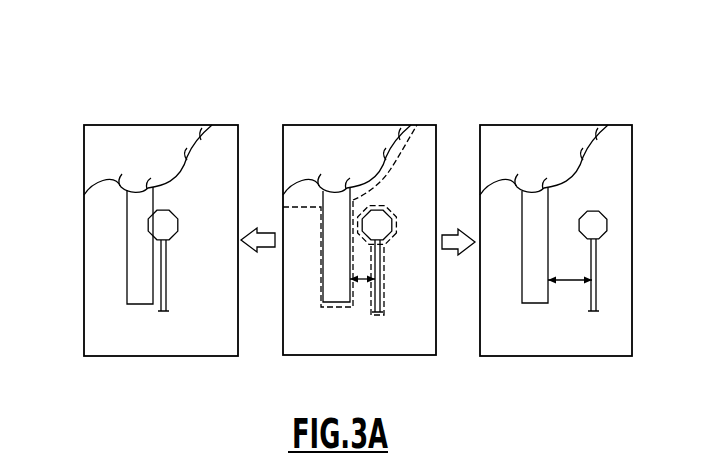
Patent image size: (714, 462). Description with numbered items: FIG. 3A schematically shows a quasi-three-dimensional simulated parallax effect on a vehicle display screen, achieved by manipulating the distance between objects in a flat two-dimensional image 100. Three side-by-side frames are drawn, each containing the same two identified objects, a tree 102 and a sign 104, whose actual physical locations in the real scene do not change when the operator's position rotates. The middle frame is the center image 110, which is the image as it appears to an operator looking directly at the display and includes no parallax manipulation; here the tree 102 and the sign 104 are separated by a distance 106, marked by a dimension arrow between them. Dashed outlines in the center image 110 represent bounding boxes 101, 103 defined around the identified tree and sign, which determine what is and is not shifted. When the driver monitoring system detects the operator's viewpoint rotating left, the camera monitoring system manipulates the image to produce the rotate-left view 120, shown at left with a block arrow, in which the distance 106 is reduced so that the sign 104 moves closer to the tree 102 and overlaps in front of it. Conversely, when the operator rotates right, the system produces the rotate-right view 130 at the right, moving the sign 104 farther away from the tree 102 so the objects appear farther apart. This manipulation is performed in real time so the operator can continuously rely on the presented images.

The flat 2D image 100 is at (378, 60).
The bounding box 101 is at (320, 290).
The tree 102 is at (115, 148).
The bounding box 103 is at (383, 301).
The sign 104 is at (165, 231).
The distance 106 is at (368, 284).
The center image 110 is at (421, 106).
The rotate-left view 120 is at (224, 106).
The rotate-right view 130 is at (496, 125).